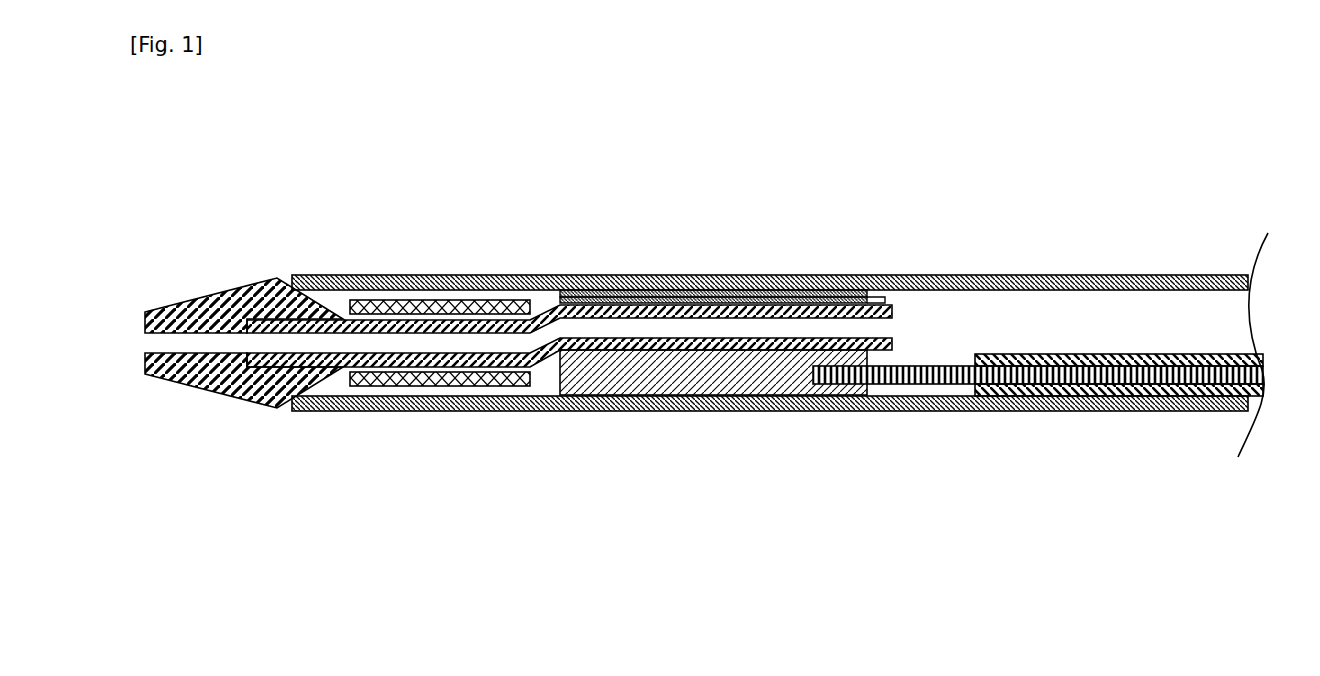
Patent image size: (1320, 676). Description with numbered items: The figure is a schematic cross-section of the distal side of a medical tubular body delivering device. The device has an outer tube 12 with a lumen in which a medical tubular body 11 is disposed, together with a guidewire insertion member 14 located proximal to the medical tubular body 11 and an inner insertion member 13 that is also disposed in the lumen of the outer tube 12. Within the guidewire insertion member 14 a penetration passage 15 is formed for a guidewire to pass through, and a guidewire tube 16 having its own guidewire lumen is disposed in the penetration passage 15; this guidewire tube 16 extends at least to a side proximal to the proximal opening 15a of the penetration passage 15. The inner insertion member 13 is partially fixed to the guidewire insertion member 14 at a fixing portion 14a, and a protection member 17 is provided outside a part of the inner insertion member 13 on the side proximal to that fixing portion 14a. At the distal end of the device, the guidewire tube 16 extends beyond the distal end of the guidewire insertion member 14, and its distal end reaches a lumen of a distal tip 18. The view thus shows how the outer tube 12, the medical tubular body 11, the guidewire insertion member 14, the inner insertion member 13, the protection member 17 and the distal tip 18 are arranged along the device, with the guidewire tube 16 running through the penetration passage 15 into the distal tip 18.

The medical tubular body 11 is at (355, 288).
The outer tube 12 is at (422, 285).
The inner insertion member 13 is at (922, 412).
The guidewire insertion member 14 is at (662, 292).
The fixing portion 14a is at (813, 413).
The penetration passage 15 is at (780, 298).
The proximal opening 15a is at (880, 305).
The guidewire tube 16 is at (890, 343).
The protection member 17 is at (1172, 365).
The distal tip 18 is at (198, 388).